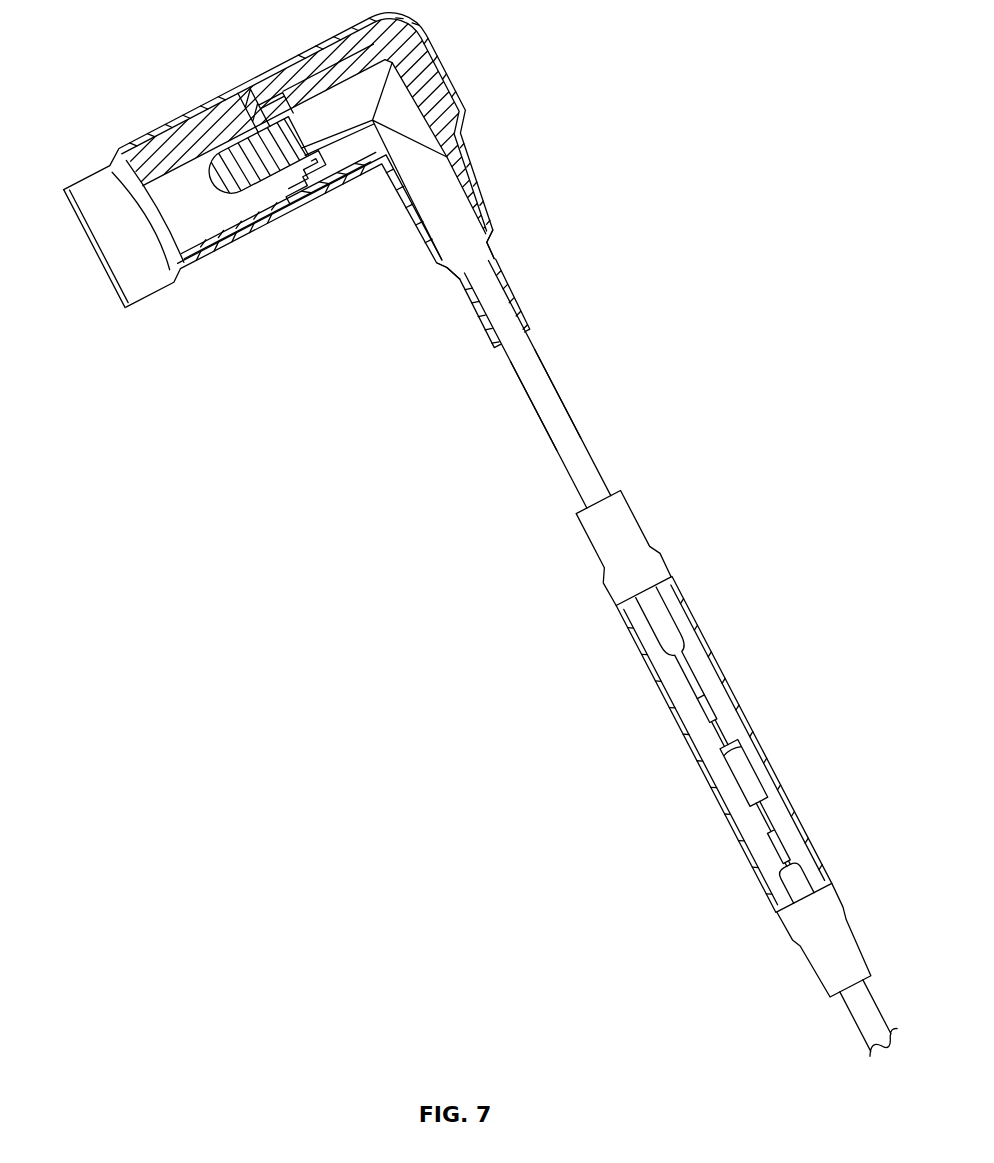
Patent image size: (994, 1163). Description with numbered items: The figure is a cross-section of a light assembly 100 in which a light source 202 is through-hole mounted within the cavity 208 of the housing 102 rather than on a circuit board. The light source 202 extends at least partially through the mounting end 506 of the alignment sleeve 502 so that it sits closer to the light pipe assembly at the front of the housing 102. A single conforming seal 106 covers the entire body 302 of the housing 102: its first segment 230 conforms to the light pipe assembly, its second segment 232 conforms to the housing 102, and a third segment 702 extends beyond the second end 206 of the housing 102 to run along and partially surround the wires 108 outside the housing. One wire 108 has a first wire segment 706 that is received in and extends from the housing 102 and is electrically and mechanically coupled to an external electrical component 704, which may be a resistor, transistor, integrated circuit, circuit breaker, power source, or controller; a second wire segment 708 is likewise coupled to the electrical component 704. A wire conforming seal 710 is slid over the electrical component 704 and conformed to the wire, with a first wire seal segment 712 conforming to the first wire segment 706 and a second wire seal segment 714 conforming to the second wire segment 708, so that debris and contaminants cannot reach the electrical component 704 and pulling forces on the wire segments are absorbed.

The light assembly 100 is at (128, 56).
The housing 102 is at (399, 46).
The conforming seal 106 is at (450, 64).
The wires 108 is at (571, 418).
The light source 202 is at (250, 98).
The second end 206 is at (491, 223).
The cavity 208 is at (405, 133).
The first segment 230 is at (74, 183).
The second segment 232 is at (351, 183).
The body 302 is at (362, 45).
The alignment sleeve 502 is at (205, 228).
The mounting end 506 is at (300, 182).
The third segment 702 is at (470, 302).
The electrical component 704 is at (766, 766).
The first wire segment 706 is at (545, 372).
The second wire segment 708 is at (863, 1016).
The wire conforming seal 710 is at (698, 619).
The first wire seal segment 712 is at (598, 522).
The second wire seal segment 714 is at (791, 929).